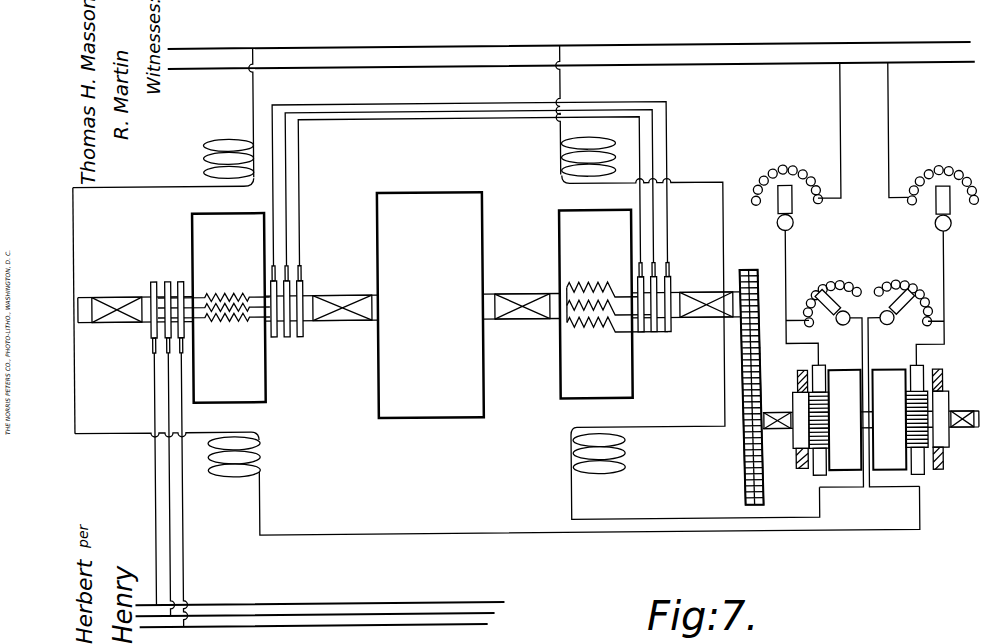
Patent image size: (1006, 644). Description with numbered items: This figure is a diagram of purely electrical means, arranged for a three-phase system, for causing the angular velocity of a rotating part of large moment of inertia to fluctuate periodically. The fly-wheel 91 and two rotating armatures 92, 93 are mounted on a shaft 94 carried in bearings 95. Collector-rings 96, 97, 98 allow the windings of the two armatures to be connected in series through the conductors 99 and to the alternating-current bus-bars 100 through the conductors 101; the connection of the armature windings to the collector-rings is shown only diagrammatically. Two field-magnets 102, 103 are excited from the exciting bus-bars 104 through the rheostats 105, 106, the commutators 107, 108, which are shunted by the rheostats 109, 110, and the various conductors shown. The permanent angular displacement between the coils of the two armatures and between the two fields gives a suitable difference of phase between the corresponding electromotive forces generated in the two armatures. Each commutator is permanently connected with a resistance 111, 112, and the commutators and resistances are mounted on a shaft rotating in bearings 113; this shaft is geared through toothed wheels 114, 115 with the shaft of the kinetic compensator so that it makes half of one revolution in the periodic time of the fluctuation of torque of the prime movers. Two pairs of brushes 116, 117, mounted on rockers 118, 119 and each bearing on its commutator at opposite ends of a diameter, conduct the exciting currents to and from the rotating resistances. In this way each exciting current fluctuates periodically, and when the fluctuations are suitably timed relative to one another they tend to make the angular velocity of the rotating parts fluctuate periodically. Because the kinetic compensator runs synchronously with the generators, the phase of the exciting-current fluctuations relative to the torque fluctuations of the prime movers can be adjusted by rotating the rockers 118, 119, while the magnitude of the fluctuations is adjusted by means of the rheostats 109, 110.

The fly-wheel 91 is at (430, 305).
The rotating armature 92 is at (214, 308).
The rotating armature 93 is at (614, 304).
The shaft 94 is at (489, 292).
The bearings 95 is at (114, 320).
The collector-rings 96 is at (153, 279).
The collector-rings 97 is at (291, 338).
The collector-rings 98 is at (657, 334).
The conductors 99 is at (413, 120).
The alternating-current bus-bars 100 is at (319, 603).
The conductors 101 is at (155, 490).
The field-magnet 102 is at (496, 289).
The field-magnet 103 is at (668, 281).
The exciting bus-bars 104 is at (724, 44).
The rheostat 105 is at (934, 214).
The rheostat 106 is at (796, 214).
The commutator 107 is at (958, 438).
The commutator 108 is at (792, 440).
The rheostat 109 is at (900, 372).
The rheostat 110 is at (832, 373).
The resistance 111 is at (900, 419).
The resistance 112 is at (834, 420).
The bearings 113 is at (774, 414).
The toothed wheel 114 is at (742, 473).
The toothed wheel 115 is at (762, 302).
The brushes 116 is at (825, 376).
The brushes 117 is at (910, 376).
The rocker 118 is at (800, 468).
The rocker 119 is at (947, 465).